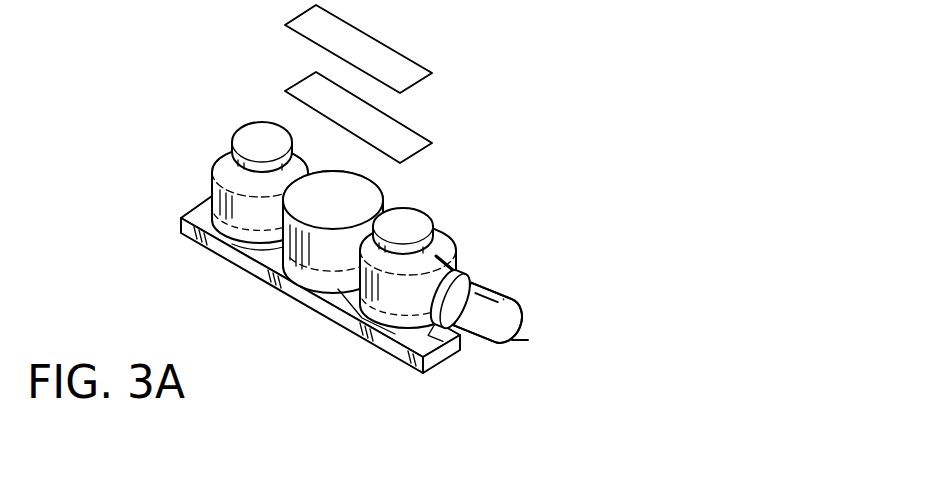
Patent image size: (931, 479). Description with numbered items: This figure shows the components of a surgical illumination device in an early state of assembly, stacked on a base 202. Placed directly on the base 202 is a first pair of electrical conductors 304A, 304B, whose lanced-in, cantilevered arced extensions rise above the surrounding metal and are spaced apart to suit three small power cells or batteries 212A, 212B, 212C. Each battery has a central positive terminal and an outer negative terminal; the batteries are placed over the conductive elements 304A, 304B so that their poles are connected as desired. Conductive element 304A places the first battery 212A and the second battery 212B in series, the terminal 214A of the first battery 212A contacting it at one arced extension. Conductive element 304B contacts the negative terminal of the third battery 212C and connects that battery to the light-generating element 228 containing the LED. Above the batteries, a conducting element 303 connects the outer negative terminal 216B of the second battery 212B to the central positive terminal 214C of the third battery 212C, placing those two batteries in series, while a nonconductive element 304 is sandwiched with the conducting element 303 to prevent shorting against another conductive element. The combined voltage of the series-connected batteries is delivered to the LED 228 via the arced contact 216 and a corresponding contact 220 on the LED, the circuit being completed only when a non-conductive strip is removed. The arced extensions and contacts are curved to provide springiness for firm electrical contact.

The base 202 is at (330, 310).
The first battery 212A is at (258, 220).
The second battery 212B is at (317, 260).
The third battery 212C is at (407, 310).
The terminal of first battery 214A is at (255, 143).
The positive terminal of third battery 214C is at (405, 222).
The arced contact 216 is at (523, 347).
The outer negative terminal of second battery 216B is at (348, 188).
The contact of the LED 220 is at (455, 268).
The light-emitting diode 228 is at (523, 337).
The conducting element 303 is at (418, 158).
The nonconductive element 304 is at (418, 88).
The first electrical conductor 304A is at (277, 253).
The second electrical conductor 304B is at (428, 330).